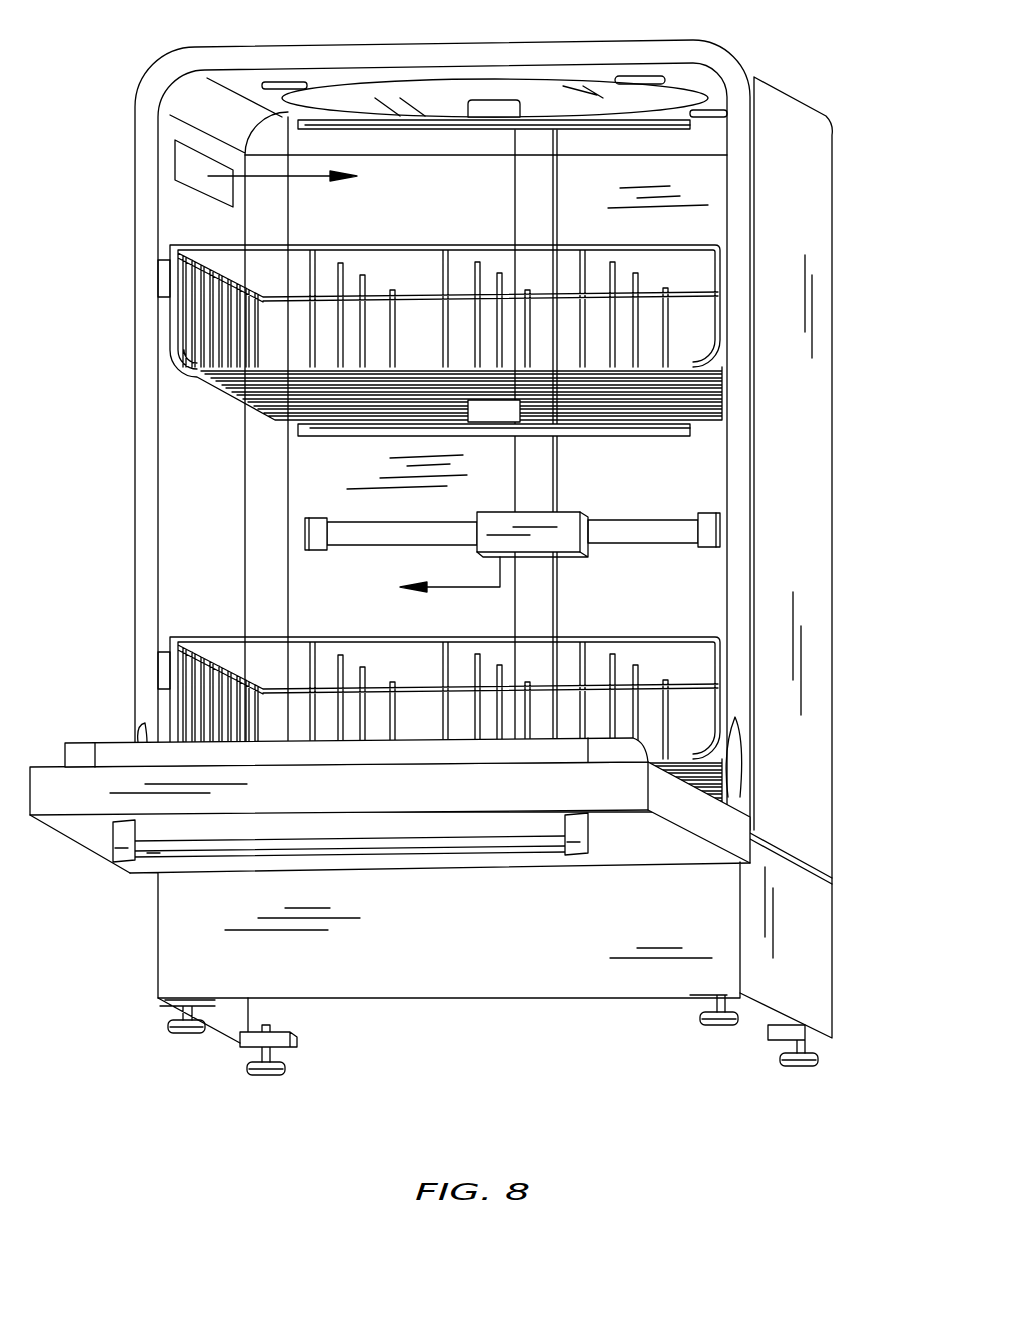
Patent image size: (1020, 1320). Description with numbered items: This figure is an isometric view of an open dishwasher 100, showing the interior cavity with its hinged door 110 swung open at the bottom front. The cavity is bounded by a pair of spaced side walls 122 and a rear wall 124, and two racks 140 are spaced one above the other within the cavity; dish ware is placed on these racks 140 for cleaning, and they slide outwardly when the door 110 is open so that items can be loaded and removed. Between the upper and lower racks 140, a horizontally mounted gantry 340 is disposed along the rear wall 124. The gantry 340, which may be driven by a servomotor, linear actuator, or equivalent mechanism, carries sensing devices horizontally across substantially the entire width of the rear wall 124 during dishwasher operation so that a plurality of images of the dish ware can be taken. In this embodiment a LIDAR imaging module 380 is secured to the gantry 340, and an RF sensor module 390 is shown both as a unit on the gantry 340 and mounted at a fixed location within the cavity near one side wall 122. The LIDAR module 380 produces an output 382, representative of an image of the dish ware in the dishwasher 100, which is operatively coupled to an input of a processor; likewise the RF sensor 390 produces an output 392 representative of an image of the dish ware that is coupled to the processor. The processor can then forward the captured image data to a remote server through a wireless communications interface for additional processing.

The dishwasher 100 is at (823, 773).
The hinged door 110 is at (623, 802).
The side walls 122 is at (197, 540).
The rear wall 124 is at (322, 485).
The rack 140 is at (717, 325).
The gantry 340 is at (687, 537).
The LIDAR imaging module 380 is at (565, 518).
The output of LIDAR module 382 is at (452, 590).
The RF sensor module 390 is at (177, 156).
The output of RF sensor 392 is at (330, 177).